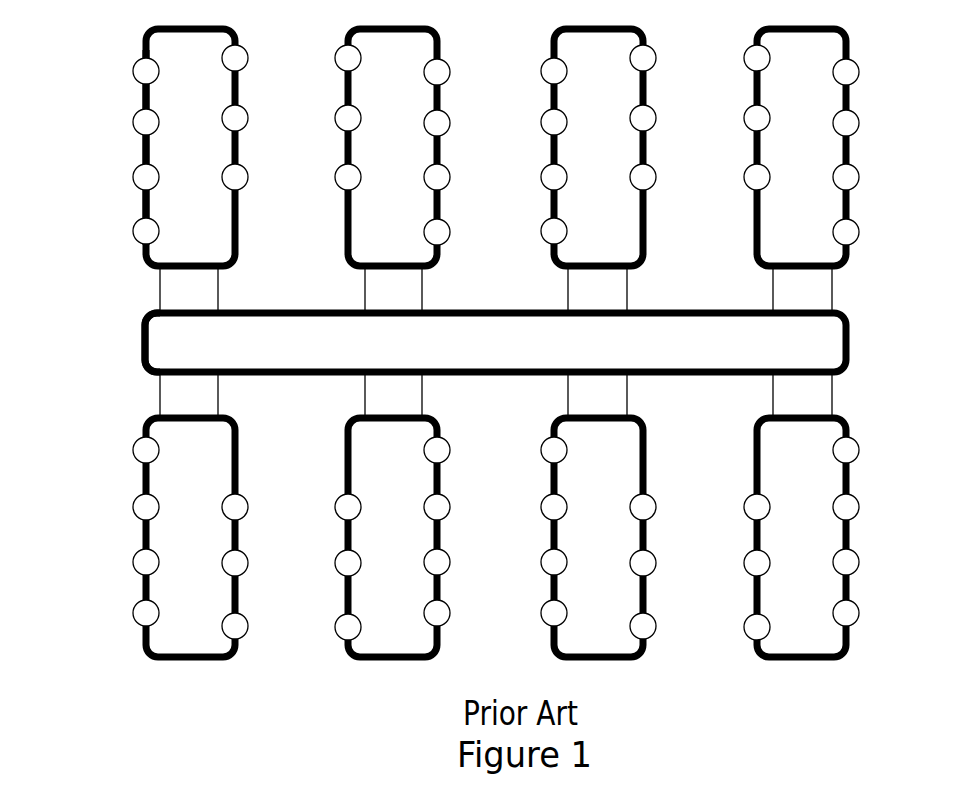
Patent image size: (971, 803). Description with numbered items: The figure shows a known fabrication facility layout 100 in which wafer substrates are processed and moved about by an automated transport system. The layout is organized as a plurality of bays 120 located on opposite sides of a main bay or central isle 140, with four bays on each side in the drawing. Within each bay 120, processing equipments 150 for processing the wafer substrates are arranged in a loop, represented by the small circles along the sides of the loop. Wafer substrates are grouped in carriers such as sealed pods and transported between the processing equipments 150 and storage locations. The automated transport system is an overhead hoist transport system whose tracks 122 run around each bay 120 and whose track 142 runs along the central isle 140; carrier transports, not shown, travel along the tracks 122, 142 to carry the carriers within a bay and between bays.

The fabrication facility layout 100 is at (500, 351).
The bay 120 is at (511, 338).
The track 122 is at (145, 107).
The main bay or central isle 140 is at (445, 328).
The track 142 is at (145, 357).
The processing equipment 150 is at (857, 117).